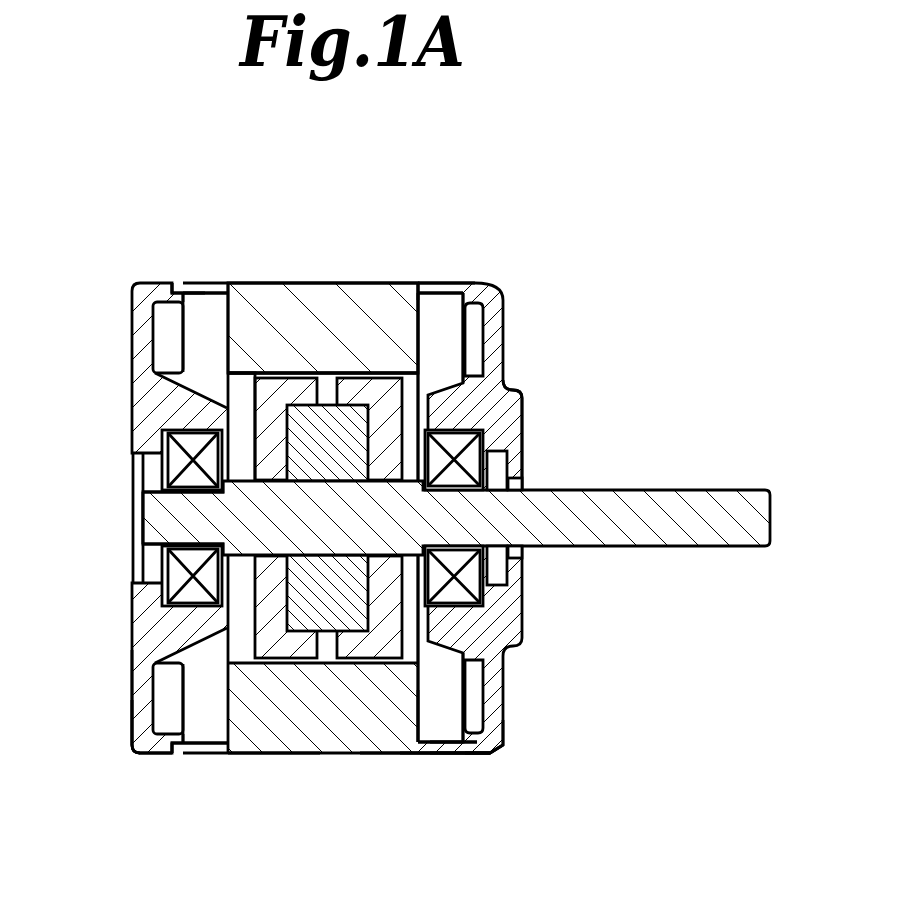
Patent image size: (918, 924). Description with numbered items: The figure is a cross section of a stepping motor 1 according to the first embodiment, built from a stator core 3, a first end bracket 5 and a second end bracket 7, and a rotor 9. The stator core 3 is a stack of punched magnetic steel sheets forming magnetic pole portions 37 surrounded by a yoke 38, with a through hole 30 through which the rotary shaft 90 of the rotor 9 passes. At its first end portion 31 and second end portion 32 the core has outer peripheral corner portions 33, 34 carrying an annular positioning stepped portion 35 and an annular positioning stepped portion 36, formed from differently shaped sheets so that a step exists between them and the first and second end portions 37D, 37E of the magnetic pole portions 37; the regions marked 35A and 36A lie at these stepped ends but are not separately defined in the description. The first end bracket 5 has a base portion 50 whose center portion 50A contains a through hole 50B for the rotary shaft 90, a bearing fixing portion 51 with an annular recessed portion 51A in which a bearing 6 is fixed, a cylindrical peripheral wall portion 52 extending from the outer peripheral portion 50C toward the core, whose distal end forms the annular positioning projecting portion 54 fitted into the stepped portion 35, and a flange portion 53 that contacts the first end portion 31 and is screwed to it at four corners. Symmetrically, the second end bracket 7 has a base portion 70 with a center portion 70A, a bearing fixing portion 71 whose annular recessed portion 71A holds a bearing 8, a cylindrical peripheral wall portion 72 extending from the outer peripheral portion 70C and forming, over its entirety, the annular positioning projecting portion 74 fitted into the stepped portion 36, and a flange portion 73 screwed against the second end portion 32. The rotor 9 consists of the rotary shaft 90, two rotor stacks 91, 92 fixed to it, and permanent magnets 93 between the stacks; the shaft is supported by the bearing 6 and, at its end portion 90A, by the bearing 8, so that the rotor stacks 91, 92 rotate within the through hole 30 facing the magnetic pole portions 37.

The stepping motor 1 is at (516, 269).
The stator core 3 is at (298, 283).
The first end bracket 5 is at (523, 413).
The bearing 6 is at (483, 593).
The second end bracket 7 is at (132, 347).
The bearing 8 is at (162, 596).
The rotor 9 is at (252, 410).
The through hole 30 is at (340, 663).
The first end portion 31 is at (423, 755).
The second end portion 32 is at (228, 745).
The outer peripheral corner portion 33 is at (392, 745).
The outer peripheral corner portion 34 is at (258, 753).
The annular positioning stepped portion 35 is at (447, 753).
The end face of core 35A is at (440, 283).
The annular positioning stepped portion 36 is at (213, 755).
The recess 36A is at (215, 283).
The magnetic pole portions 37 is at (362, 320).
The first end portions of magnetic pole portions 37D is at (422, 320).
The second end portions of magnetic pole portions 37E is at (197, 296).
The yoke 38 is at (392, 370).
The base portion 50 is at (503, 688).
The center portion 50A is at (503, 345).
The through hole 50B is at (525, 485).
The outer peripheral portion 50C is at (503, 738).
The bearing fixing portion 51 is at (447, 383).
The annular recessed portion 51A is at (457, 423).
The cylindrical peripheral wall portion 52 is at (477, 717).
The annular positioning projecting portion 54 is at (473, 753).
The flange portion 53 is at (490, 753).
The base portion 70 is at (132, 645).
The center portion 70A is at (132, 376).
The outer peripheral portion 70C is at (132, 697).
The bearing fixing portion 71 is at (185, 745).
The annular recessed portion 71A is at (200, 422).
The cylindrical peripheral wall portion 72 is at (165, 749).
The annular positioning projecting portion 74 is at (172, 735).
The flange portion 73 is at (148, 750).
The rotary shaft 90 is at (697, 490).
The end portion of rotary shaft 90A is at (172, 520).
The rotor stack 91 is at (412, 300).
The rotor stack 92 is at (272, 373).
The permanent magnets 93 is at (327, 405).